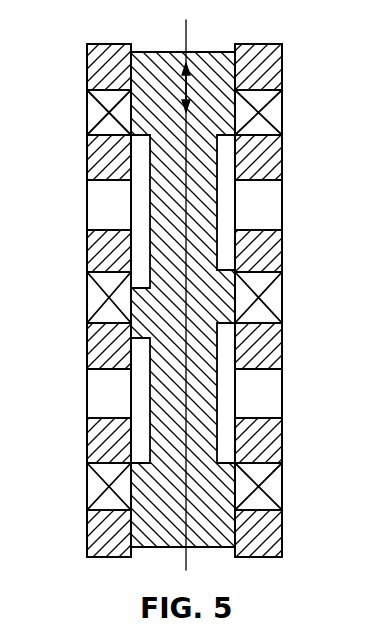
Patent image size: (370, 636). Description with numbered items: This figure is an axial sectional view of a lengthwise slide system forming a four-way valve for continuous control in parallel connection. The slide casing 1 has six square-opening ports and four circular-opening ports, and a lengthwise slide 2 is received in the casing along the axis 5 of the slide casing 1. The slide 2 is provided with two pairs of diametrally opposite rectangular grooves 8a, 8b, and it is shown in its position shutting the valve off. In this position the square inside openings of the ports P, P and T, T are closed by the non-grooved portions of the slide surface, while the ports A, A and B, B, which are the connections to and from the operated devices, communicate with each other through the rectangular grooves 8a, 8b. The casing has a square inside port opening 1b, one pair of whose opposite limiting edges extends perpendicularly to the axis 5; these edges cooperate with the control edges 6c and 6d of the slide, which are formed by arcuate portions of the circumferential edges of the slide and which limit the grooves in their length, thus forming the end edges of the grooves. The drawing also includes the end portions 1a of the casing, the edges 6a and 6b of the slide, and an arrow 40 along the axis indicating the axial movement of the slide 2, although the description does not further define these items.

The slide casing 1 is at (97, 160).
The lengthwise slide 2 is at (245, 158).
The end yoke 1a is at (107, 96).
The square inside port opening 1b is at (92, 288).
The axis 5 is at (187, 348).
The pole piece 6a is at (105, 151).
The pole piece 6b is at (108, 448).
The control edge 6c is at (125, 255).
The control edge 6d is at (88, 333).
The rectangular groove 8a is at (95, 182).
The rectangular groove 8b is at (130, 390).
The axial displacement arrow 40 is at (196, 83).
The port T is at (182, 300).
The port P is at (183, 298).
The port A is at (185, 207).
The port B is at (187, 387).